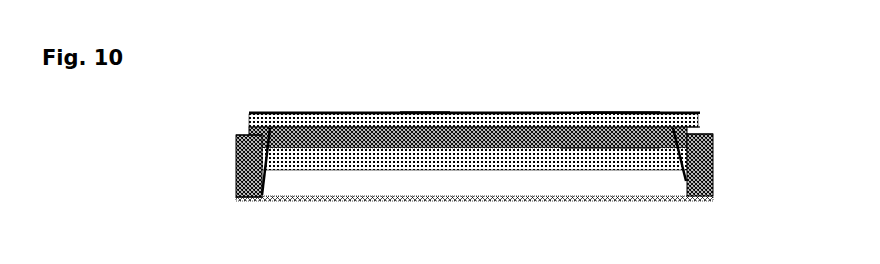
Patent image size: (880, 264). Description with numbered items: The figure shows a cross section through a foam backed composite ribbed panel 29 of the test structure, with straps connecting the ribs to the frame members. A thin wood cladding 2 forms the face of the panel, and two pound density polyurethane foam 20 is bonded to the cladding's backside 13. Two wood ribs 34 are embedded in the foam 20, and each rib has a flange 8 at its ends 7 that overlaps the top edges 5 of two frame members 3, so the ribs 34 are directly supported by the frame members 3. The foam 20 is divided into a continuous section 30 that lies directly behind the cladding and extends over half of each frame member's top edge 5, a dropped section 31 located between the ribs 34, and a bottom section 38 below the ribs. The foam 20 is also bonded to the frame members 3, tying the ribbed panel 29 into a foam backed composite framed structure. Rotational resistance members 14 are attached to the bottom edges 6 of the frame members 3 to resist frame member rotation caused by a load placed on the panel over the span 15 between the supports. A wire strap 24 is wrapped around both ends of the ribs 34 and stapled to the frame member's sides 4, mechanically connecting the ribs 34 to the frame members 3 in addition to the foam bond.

The wood cladding 2 is at (368, 112).
The frame members 3 is at (235, 172).
The frame member's sides 4 is at (683, 181).
The top edges 5 is at (247, 133).
The bottom edges 6 is at (238, 198).
The ends 7 is at (698, 128).
The flange 8 is at (700, 133).
The cladding's backside 13 is at (600, 112).
The rotational resistance members 14 is at (480, 198).
The span 15 is at (415, 182).
The polyurethane foam 20 is at (477, 158).
The wire strap 24 is at (267, 156).
The ribbed panel 29 is at (540, 111).
The continuous section 30 is at (248, 112).
The dropped section 31 is at (607, 147).
The wood ribs 34 is at (423, 113).
The bottom section 38 is at (527, 158).